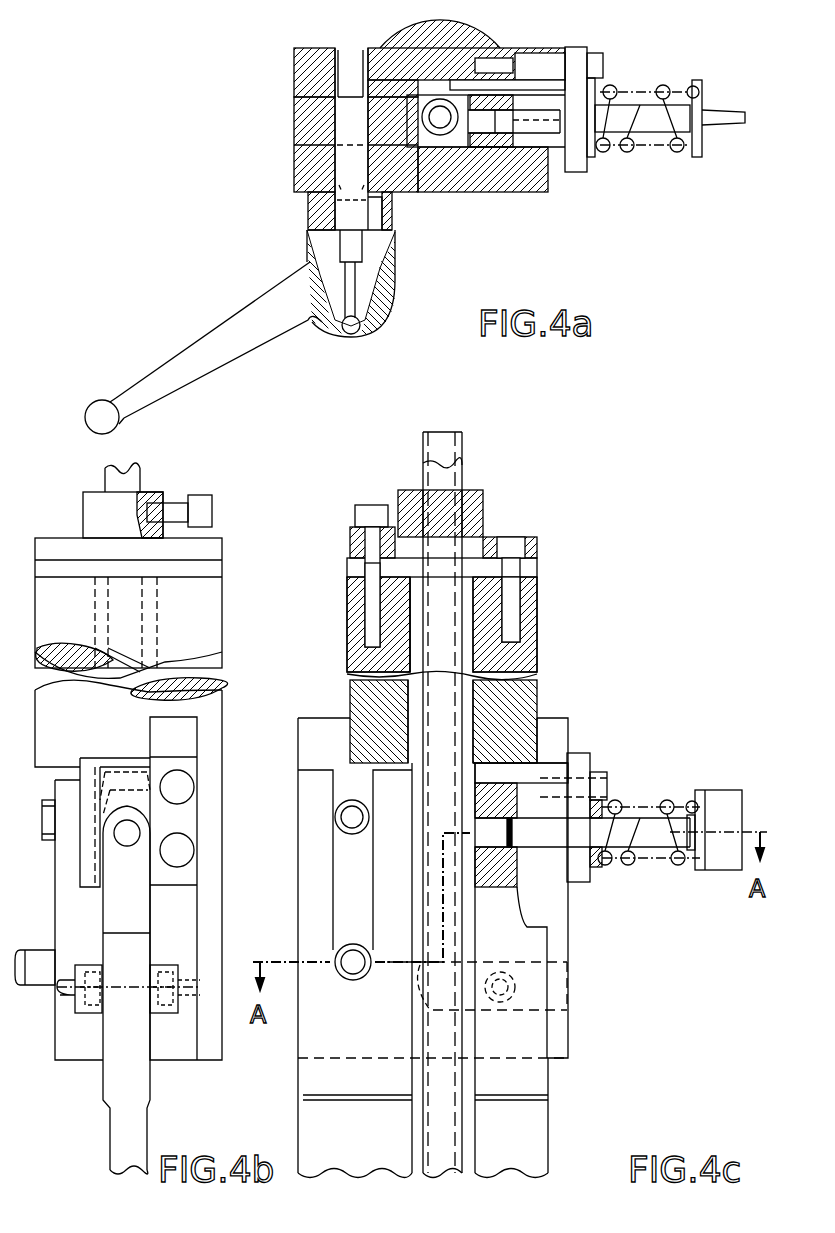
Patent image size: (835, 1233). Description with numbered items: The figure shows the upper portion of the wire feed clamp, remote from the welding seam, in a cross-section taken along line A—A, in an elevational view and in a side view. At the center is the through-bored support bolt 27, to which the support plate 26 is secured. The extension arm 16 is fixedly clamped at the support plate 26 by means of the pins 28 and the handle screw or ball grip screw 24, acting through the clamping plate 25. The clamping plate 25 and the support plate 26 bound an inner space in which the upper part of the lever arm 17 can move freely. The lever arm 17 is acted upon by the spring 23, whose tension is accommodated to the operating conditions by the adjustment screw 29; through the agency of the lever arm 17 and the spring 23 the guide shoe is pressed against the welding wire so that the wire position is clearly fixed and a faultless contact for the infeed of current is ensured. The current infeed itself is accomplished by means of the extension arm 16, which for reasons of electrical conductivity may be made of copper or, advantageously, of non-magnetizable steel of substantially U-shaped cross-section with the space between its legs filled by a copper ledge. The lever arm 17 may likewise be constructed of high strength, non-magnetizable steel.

In FIG. 4a, the extension arm 16 is at (306, 136).
In FIG. 4c, the extension arm 16 is at (327, 1123).
In FIG. 4a, the lever arm 17 is at (474, 140).
In FIG. 4c, the lever arm 17 is at (523, 1130).
In FIG. 4a, the spring 23 is at (626, 150).
In FIG. 4c, the spring 23 is at (617, 800).
In FIG. 4a, the ball grip screw 24 is at (170, 375).
In FIG. 4a, the clamping plate 25 is at (513, 170).
In FIG. 4b, the clamping plate 25 is at (78, 1048).
In FIG. 4a, the support plate 26 is at (312, 78).
In FIG. 4b, the support plate 26 is at (175, 1047).
In FIG. 4c, the support plate 26 is at (543, 743).
In FIG. 4a, the support bolt 27 is at (420, 30).
In FIG. 4b, the support bolt 27 is at (202, 598).
In FIG. 4c, the support bolt 27 is at (537, 608).
In FIG. 4a, the pins 28 is at (352, 158).
In FIG. 4b, the pins 28 is at (50, 818).
In FIG. 4c, the pins 28 is at (352, 817).
In FIG. 4a, the adjustment screw 29 is at (720, 116).
In FIG. 4c, the adjustment screw 29 is at (717, 810).